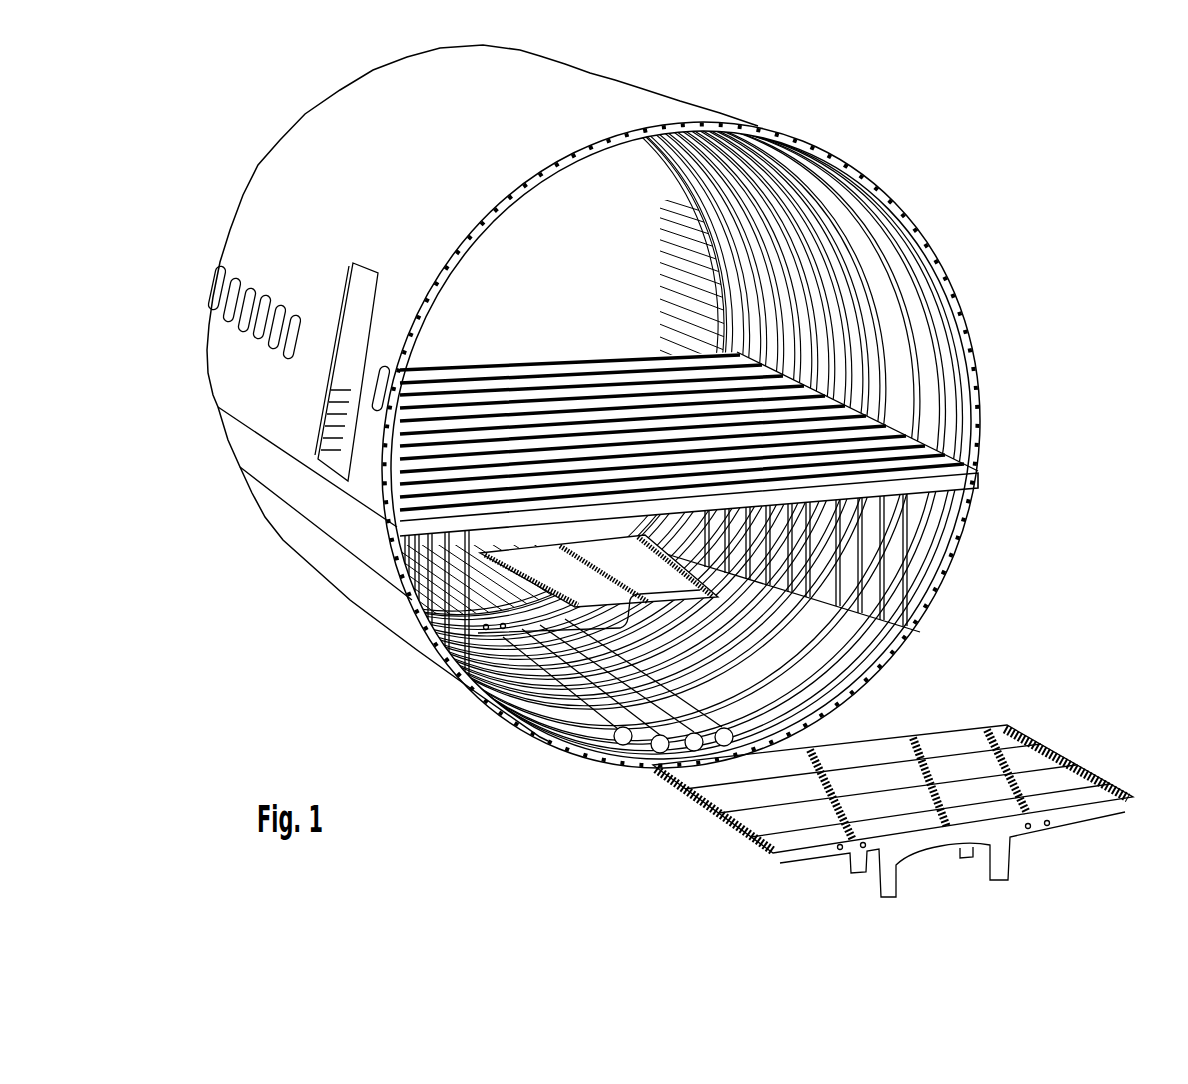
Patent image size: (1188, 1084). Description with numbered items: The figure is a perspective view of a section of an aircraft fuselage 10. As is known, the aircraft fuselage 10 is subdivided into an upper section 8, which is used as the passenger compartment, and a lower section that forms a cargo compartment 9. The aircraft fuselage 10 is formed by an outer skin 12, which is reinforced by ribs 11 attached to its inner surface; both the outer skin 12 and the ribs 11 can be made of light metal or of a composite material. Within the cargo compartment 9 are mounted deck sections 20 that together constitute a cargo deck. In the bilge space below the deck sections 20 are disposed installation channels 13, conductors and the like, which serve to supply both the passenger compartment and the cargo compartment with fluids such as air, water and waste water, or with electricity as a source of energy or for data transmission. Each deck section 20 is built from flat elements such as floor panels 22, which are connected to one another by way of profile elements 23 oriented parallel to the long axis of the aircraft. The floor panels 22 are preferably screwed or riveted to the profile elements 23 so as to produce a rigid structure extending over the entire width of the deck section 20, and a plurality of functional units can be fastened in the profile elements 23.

The upper section 8 is at (964, 285).
The cargo compartment 9 is at (960, 591).
The aircraft fuselage 10 is at (980, 326).
The ribs 11 is at (972, 355).
The outer skin 12 is at (224, 357).
The installation channels 13 is at (618, 742).
The deck sections 20 is at (788, 624).
The floor panels 22 is at (1065, 800).
The profile elements 23 is at (988, 728).